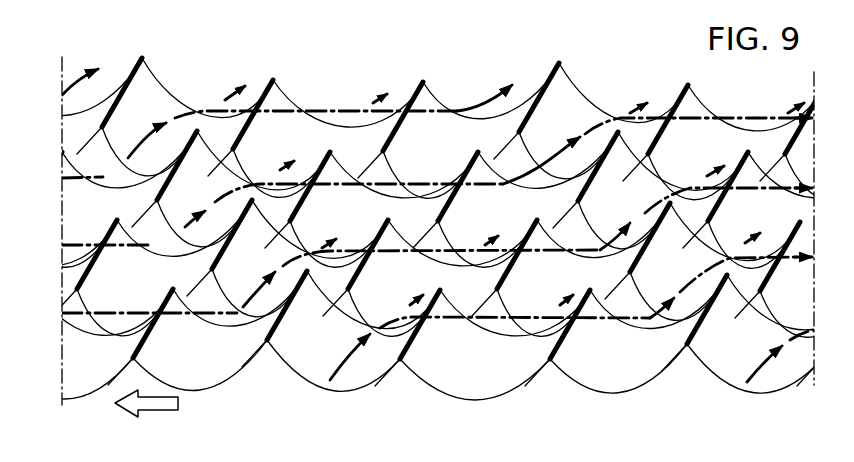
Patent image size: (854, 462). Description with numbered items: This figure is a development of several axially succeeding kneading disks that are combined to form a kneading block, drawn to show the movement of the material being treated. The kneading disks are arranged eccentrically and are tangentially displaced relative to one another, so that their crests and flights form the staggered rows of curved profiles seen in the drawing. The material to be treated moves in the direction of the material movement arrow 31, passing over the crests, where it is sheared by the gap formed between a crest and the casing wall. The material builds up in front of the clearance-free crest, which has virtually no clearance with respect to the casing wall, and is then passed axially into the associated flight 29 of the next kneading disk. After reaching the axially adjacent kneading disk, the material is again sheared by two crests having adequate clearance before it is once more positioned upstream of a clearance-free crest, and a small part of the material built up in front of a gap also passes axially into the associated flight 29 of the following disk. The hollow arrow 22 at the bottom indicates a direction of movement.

The material movement arrow 31 is at (334, 110).
The direction of movement 22 is at (155, 404).
The flight 29 is at (455, 362).